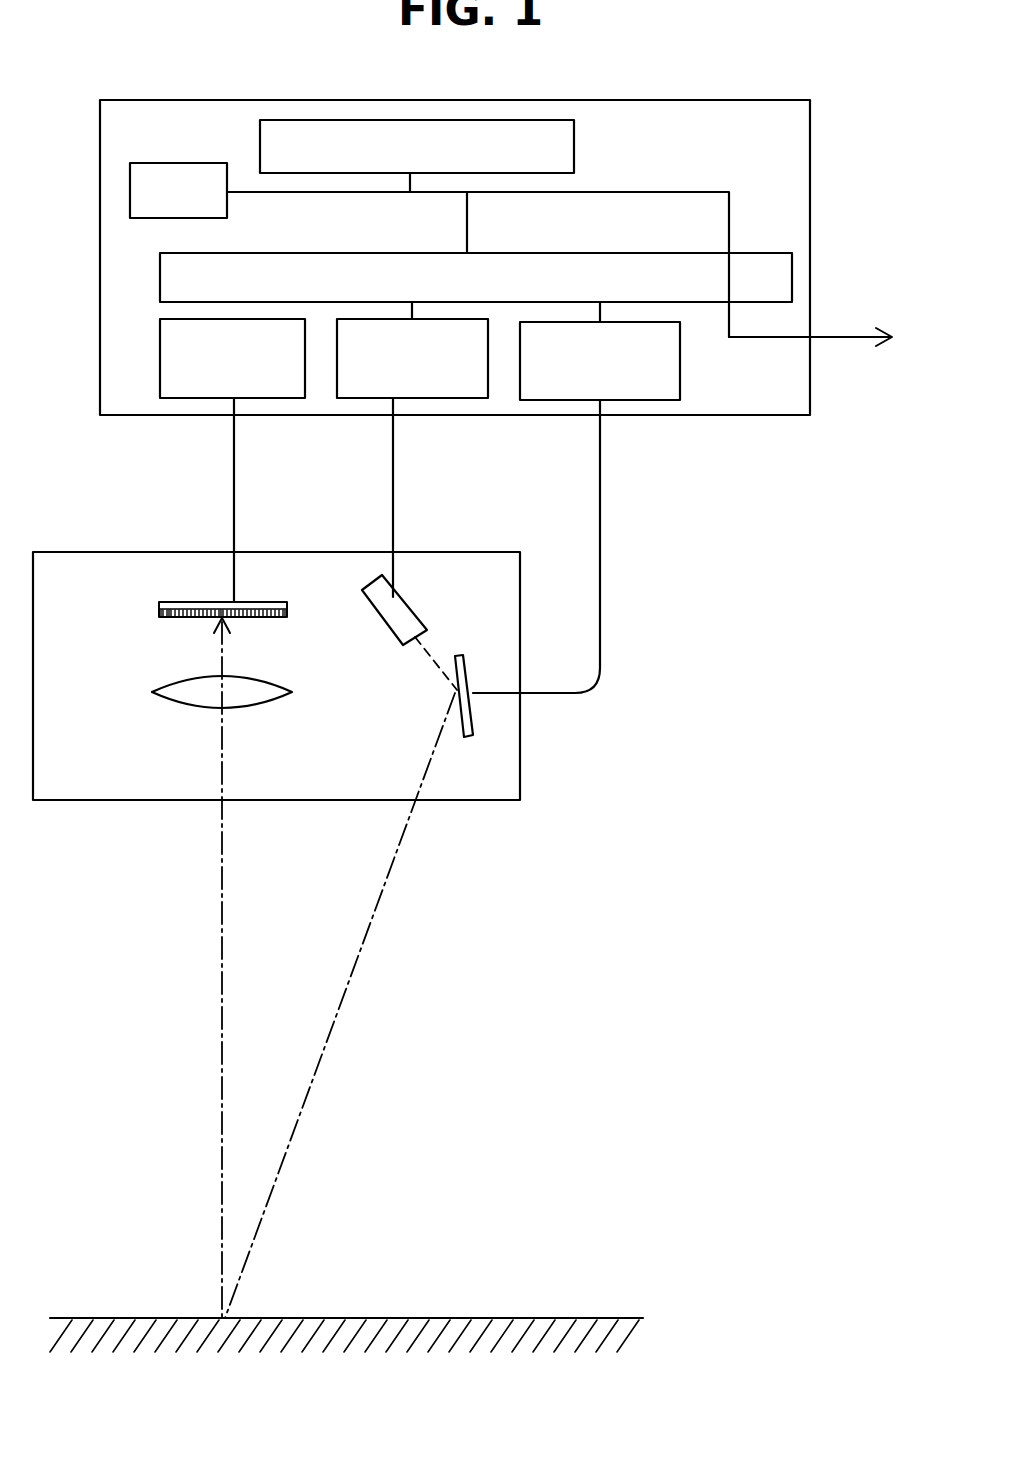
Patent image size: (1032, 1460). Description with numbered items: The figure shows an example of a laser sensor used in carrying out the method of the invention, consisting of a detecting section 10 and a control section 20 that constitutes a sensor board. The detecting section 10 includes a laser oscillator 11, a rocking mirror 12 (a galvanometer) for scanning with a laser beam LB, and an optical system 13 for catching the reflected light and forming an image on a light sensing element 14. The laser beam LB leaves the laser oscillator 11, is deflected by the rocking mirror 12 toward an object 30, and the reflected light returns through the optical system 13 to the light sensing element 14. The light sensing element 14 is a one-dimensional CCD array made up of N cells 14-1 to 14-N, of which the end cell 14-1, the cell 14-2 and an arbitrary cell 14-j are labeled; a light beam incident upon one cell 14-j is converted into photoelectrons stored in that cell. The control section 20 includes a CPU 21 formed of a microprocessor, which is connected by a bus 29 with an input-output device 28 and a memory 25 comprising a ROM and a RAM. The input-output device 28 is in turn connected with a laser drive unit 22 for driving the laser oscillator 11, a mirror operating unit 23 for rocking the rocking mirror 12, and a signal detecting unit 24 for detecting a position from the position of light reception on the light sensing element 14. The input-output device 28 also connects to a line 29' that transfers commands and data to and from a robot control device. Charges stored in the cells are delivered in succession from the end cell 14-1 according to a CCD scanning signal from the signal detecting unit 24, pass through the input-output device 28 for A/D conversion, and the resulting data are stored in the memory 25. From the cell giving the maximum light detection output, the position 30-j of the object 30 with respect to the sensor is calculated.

The detecting section 10 is at (505, 803).
The laser oscillator 11 is at (405, 598).
The rocking mirror 12 is at (473, 717).
The optical system 13 is at (185, 703).
The light sensing element 14 is at (183, 602).
The end cell 14-1 is at (165, 619).
The cell 14-2 is at (168, 621).
The cell 14-j is at (220, 620).
The cell 14-N is at (285, 620).
The control section 20 is at (672, 102).
The CPU 21 is at (162, 162).
The laser drive unit 22 is at (442, 398).
The mirror operating unit 23 is at (645, 400).
The signal detecting unit 24 is at (283, 398).
The memory 25 is at (574, 147).
The input-output device 28 is at (272, 253).
The bus 29 is at (486, 236).
The line 29' is at (838, 381).
The object 30 is at (375, 1318).
The position of the object 30-j is at (222, 1316).
The laser beam LB is at (222, 952).